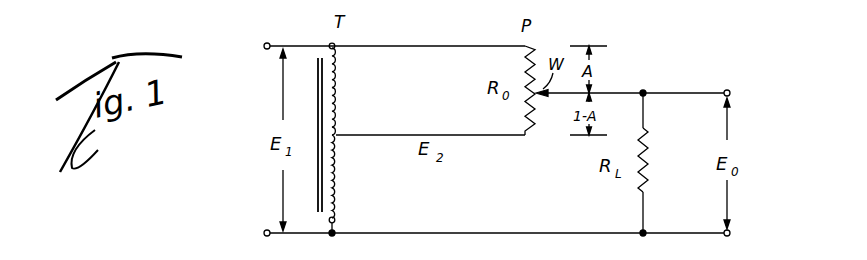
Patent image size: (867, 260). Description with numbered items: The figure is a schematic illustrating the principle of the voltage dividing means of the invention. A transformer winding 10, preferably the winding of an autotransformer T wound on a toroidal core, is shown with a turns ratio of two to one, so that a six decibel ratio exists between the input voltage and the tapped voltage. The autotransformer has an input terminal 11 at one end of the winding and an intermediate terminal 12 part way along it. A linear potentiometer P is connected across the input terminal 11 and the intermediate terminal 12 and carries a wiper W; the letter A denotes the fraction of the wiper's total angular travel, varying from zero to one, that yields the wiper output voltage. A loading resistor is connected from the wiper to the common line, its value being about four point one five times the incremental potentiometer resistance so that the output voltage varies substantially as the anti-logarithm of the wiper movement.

The transformer winding 10 is at (336, 95).
The input terminal 11 is at (331, 46).
The intermediate terminal 12 is at (336, 139).